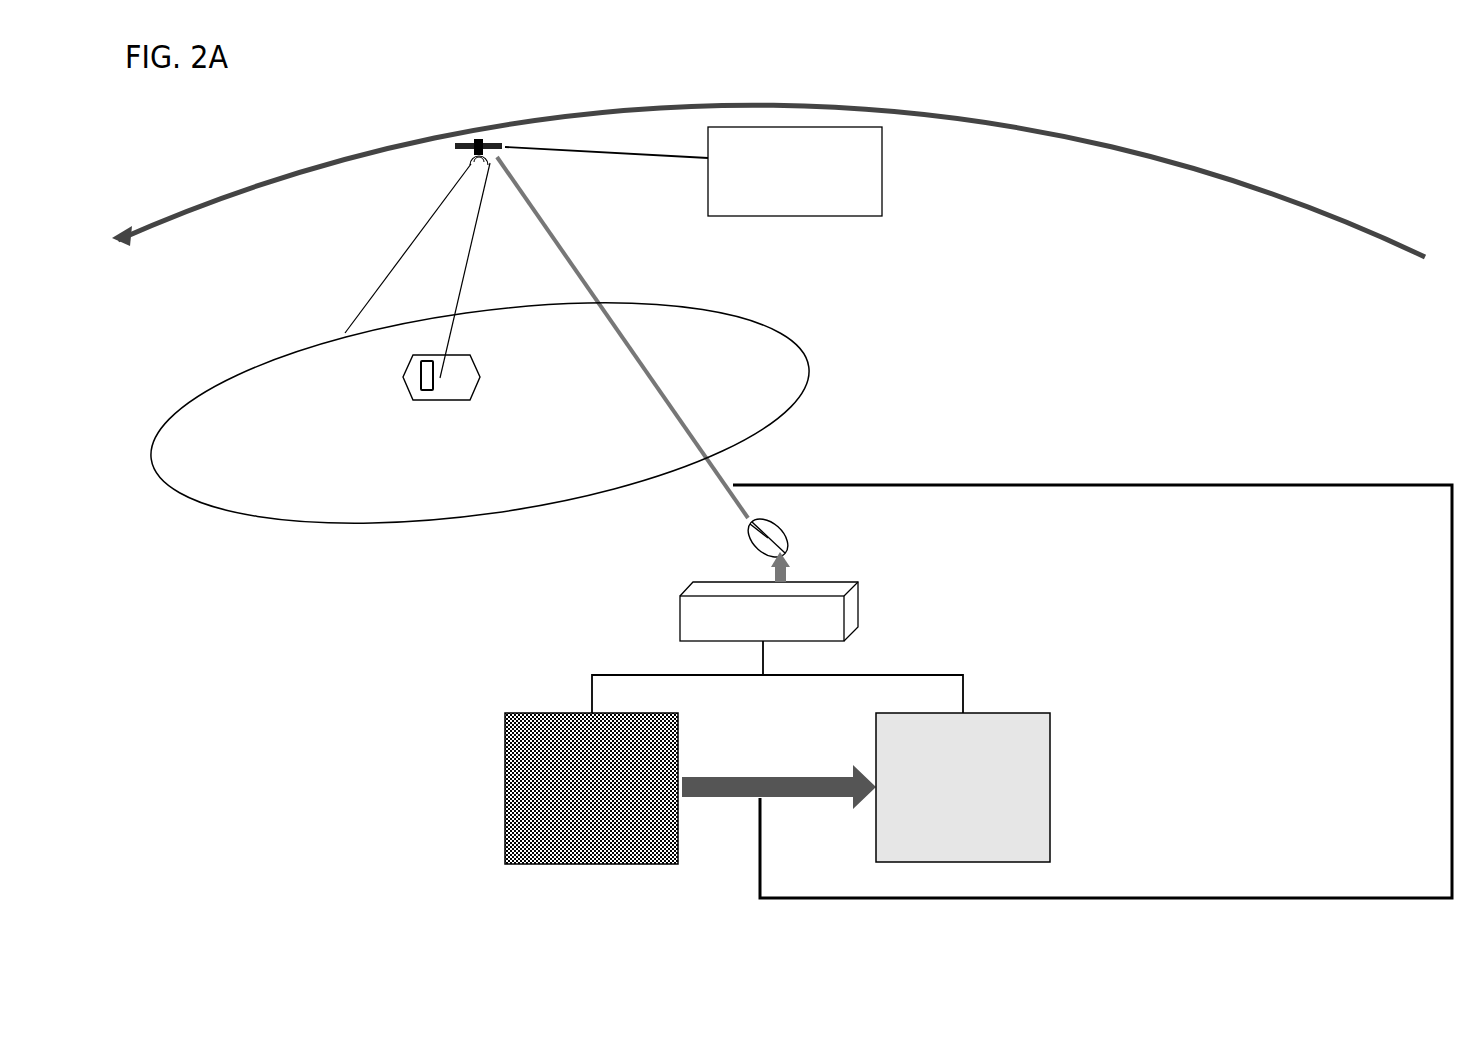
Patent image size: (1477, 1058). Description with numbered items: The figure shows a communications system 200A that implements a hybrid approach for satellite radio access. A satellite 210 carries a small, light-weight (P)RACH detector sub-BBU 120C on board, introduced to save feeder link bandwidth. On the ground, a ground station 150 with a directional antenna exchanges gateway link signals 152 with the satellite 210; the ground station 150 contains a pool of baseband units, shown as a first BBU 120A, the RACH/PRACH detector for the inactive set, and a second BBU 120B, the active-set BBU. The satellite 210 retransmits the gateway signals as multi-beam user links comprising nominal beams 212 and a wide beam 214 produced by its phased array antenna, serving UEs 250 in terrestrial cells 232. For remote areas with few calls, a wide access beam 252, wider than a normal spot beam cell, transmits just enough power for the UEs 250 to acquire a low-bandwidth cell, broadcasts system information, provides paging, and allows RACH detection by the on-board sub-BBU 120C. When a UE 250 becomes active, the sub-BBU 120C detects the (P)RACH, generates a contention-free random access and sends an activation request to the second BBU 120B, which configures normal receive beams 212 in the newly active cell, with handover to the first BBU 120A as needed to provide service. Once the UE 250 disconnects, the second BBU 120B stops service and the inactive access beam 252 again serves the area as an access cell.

The communications system 200A is at (181, 959).
The satellite 210 is at (466, 138).
The nominal beams 212 is at (462, 297).
The wide beam 214 is at (808, 360).
The cells 232 is at (481, 380).
The UEs 250 is at (421, 388).
The wide access beam 252 is at (380, 281).
The gateway link signals 152 is at (573, 265).
The ground station 150 is at (858, 606).
The first BBU 120A is at (505, 775).
The second BBU 120B is at (1050, 766).
The (P)RACH detector sub-BBU 120C is at (882, 160).